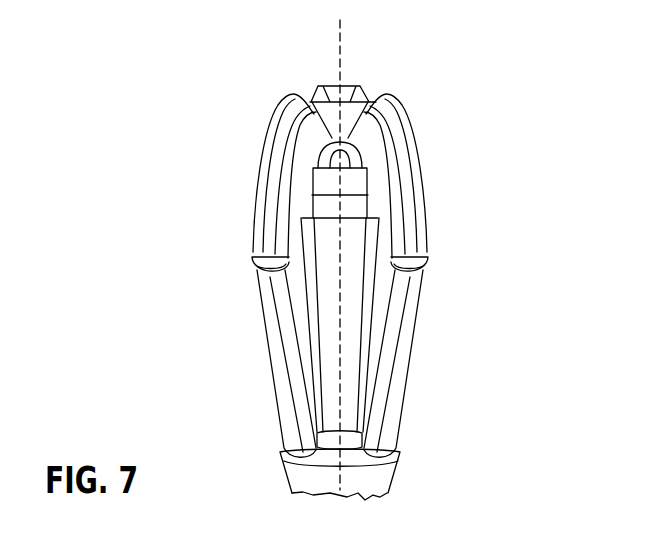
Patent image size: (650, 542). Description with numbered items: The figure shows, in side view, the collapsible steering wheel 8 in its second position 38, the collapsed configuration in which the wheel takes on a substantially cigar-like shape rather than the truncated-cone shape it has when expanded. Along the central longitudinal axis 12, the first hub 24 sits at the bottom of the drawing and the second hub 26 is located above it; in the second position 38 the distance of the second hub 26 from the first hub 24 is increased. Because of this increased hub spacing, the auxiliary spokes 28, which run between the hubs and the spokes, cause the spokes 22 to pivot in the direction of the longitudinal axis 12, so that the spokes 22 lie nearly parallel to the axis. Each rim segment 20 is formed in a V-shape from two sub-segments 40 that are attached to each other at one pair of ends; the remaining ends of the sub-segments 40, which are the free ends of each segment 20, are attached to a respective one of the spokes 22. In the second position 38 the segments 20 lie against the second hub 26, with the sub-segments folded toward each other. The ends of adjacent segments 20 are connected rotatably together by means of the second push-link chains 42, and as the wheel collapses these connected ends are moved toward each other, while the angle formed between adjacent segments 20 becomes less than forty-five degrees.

The collapsible steering wheel 8 is at (180, 118).
The longitudinal axis 12 is at (342, 52).
The segments 20 is at (274, 118).
The spokes 22 is at (412, 327).
The first hub 24 is at (372, 483).
The second hub 26 is at (378, 218).
The auxiliary spokes 28 is at (301, 283).
The second position 38 is at (512, 132).
The sub-segments 40 is at (297, 167).
The second push-link chains 42 is at (355, 88).